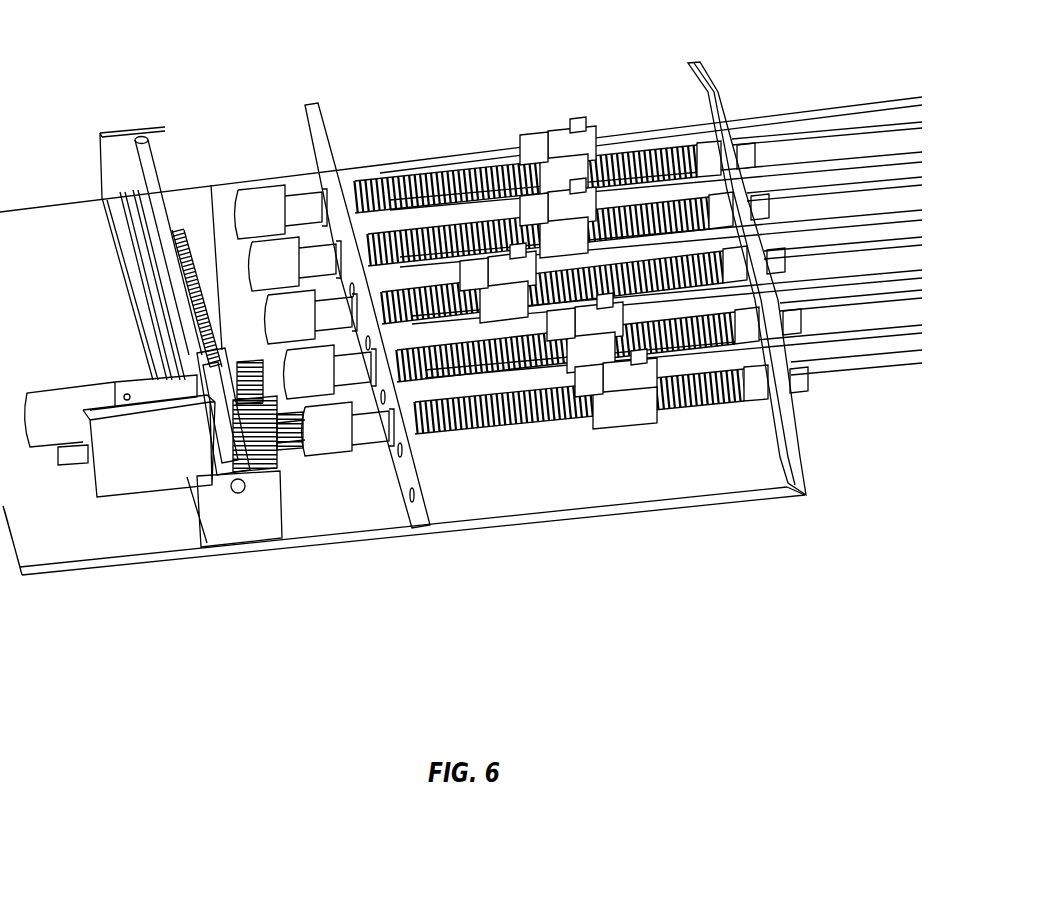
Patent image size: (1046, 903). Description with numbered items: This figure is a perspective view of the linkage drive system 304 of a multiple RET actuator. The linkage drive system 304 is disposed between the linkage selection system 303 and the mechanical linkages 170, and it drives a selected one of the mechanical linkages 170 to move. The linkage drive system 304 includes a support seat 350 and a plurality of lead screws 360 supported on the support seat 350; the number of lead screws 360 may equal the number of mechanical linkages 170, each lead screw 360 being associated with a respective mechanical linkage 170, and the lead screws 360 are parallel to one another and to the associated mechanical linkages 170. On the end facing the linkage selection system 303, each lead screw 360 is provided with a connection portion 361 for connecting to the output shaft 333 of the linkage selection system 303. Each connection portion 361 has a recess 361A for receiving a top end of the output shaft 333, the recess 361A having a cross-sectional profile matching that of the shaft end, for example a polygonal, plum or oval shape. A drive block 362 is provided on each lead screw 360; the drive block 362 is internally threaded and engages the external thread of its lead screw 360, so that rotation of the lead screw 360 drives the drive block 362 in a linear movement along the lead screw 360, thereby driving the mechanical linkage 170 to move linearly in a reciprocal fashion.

The linkage selection system 303 is at (100, 132).
The linkage drive system 304 is at (338, 84).
The output shaft 333 is at (277, 448).
The support seat 350 is at (687, 80).
The lead screw 360 is at (495, 178).
The connection portion 361 is at (277, 193).
The recess 361A is at (223, 210).
The drive block 362 is at (565, 160).
The mechanical linkage 170 is at (867, 120).